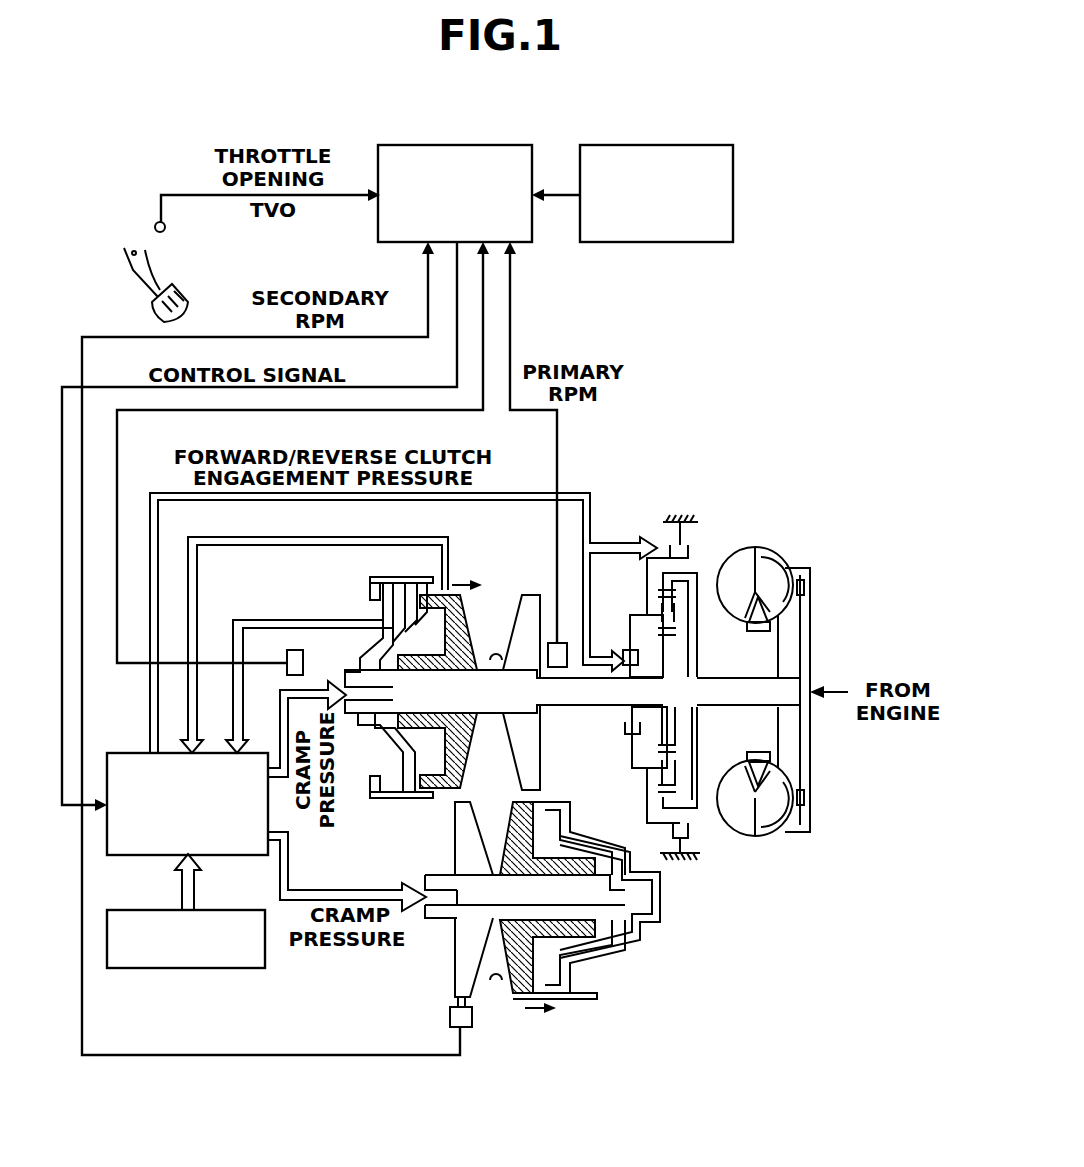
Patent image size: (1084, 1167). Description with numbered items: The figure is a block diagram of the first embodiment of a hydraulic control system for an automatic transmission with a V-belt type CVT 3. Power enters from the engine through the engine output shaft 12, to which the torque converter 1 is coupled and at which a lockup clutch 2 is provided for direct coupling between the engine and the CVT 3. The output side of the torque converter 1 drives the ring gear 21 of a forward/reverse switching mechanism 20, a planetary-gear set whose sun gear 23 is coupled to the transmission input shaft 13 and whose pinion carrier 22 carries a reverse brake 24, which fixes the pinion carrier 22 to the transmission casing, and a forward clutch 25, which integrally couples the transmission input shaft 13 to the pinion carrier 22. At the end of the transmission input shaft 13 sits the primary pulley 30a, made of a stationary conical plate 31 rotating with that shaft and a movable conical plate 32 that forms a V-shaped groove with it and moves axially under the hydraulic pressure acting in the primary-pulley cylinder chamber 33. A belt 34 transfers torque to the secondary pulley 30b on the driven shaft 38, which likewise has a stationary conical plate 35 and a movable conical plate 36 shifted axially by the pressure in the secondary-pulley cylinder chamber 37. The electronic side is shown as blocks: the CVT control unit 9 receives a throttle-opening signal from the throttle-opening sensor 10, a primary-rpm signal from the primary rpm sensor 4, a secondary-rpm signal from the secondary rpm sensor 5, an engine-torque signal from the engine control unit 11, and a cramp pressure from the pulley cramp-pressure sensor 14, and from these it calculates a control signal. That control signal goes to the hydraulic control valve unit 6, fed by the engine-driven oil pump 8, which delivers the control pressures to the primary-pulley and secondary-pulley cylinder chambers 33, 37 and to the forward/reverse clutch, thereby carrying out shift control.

The torque converter 1 is at (775, 547).
The lockup clutch 2 is at (810, 760).
The V-belt type CVT 3 is at (517, 1032).
The primary rpm sensor 4 is at (560, 643).
The secondary rpm sensor 5 is at (470, 1028).
The hydraulic control valve unit 6 is at (150, 857).
The oil pump 8 is at (196, 969).
The CVT control unit 9 is at (466, 145).
The throttle-opening sensor 10 is at (155, 223).
The engine control unit 11 is at (663, 145).
The engine output shaft 12 is at (712, 700).
The transmission input shaft 13 is at (586, 696).
The pulley cramp-pressure sensor 14 is at (286, 676).
The forward/reverse switching mechanism 20 is at (722, 846).
The ring gear 21 is at (680, 573).
The pinion carrier 22 is at (632, 615).
The sun gear 23 is at (675, 640).
The reverse brake 24 is at (668, 546).
The forward clutch 25 is at (628, 736).
The primary pulley 30a is at (372, 765).
The secondary pulley 30b is at (432, 940).
The stationary conical plate 31 is at (526, 592).
The movable conical plate 32 is at (472, 632).
The primary-pulley cylinder chamber 33 is at (425, 628).
The belt 34 is at (497, 781).
The stationary conical plate 35 is at (462, 848).
The movable conical plate 36 is at (585, 998).
The secondary-pulley cylinder chamber 37 is at (605, 935).
The driven shaft 38 is at (660, 895).